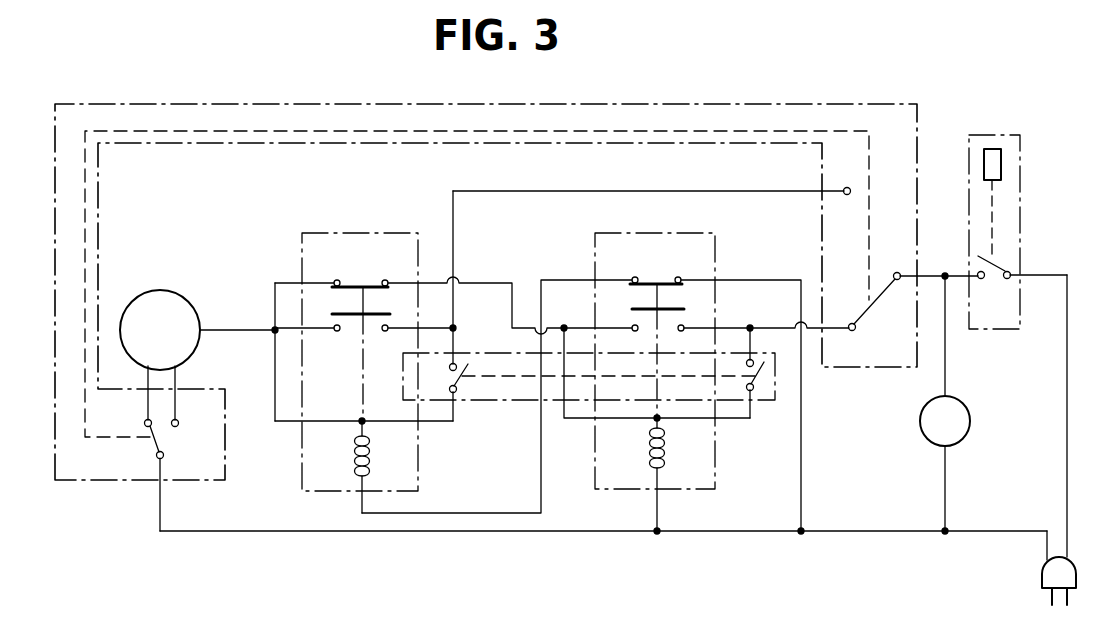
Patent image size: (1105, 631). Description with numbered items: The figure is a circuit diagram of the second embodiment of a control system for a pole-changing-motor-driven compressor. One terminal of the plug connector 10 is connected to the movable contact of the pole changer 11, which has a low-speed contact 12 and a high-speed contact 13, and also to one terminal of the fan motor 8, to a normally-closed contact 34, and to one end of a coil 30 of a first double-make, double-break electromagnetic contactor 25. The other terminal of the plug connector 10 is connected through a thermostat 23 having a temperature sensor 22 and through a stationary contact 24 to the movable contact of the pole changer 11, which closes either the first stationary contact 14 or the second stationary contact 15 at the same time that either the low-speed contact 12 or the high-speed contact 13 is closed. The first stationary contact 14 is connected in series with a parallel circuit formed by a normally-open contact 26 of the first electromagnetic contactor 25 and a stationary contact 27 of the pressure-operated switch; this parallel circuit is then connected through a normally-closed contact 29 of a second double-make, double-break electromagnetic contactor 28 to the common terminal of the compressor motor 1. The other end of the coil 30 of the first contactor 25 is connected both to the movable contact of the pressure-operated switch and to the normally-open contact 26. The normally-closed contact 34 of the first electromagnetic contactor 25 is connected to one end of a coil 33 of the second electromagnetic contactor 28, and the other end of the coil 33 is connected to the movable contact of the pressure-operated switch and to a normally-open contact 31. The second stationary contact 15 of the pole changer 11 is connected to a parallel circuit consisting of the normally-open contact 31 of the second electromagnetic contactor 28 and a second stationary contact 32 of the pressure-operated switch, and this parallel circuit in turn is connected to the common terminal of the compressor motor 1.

The compressor motor 1 is at (160, 289).
The fan motor 8 is at (970, 412).
The plug connector 10 is at (1042, 575).
The pole changer 11 is at (768, 103).
The low-speed contact 12 is at (145, 423).
The high-speed contact 13 is at (178, 423).
The first stationary contact 14 is at (857, 329).
The second stationary contact 15 is at (847, 195).
The temperature sensor 22 is at (992, 149).
The thermostat 23 is at (1020, 148).
The stationary contact 24 is at (982, 279).
The first electromagnetic contactor 25 is at (715, 423).
The normally-open contact 26 is at (683, 325).
The stationary contact 27 is at (752, 360).
The second electromagnetic contactor 28 is at (362, 233).
The normally-closed contact 29 is at (337, 280).
The coil 30 is at (651, 445).
The normally-open contact 31 is at (337, 331).
The second stationary contact 32 is at (454, 364).
The coil 33 is at (356, 452).
The normally-closed contact 34 is at (680, 277).